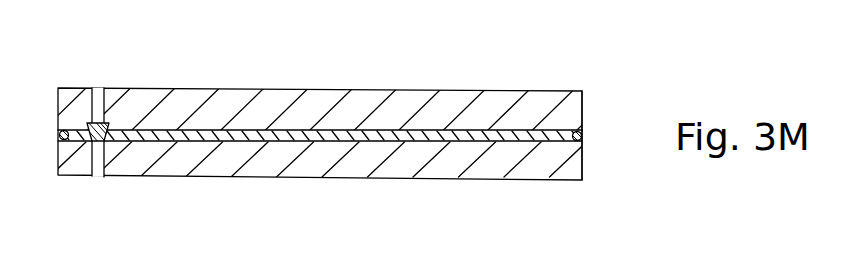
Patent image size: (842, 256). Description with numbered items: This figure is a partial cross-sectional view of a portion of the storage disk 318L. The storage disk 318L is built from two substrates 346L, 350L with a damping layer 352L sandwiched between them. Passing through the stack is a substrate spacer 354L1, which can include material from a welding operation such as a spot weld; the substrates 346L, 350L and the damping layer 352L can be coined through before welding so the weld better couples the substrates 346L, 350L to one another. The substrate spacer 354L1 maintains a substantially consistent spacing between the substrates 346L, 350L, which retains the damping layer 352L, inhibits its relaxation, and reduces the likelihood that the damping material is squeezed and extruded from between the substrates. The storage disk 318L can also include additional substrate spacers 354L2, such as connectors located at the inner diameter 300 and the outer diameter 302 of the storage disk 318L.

The inner diameter 300 is at (57, 110).
The outer diameter 302 is at (587, 162).
The storage disk 318L is at (247, 72).
The substrate 346L is at (410, 110).
The substrate 350L is at (400, 170).
The damping layer 352L is at (280, 137).
The substrate spacer 354L1 is at (103, 120).
The additional substrate spacer 354L2 is at (60, 136).